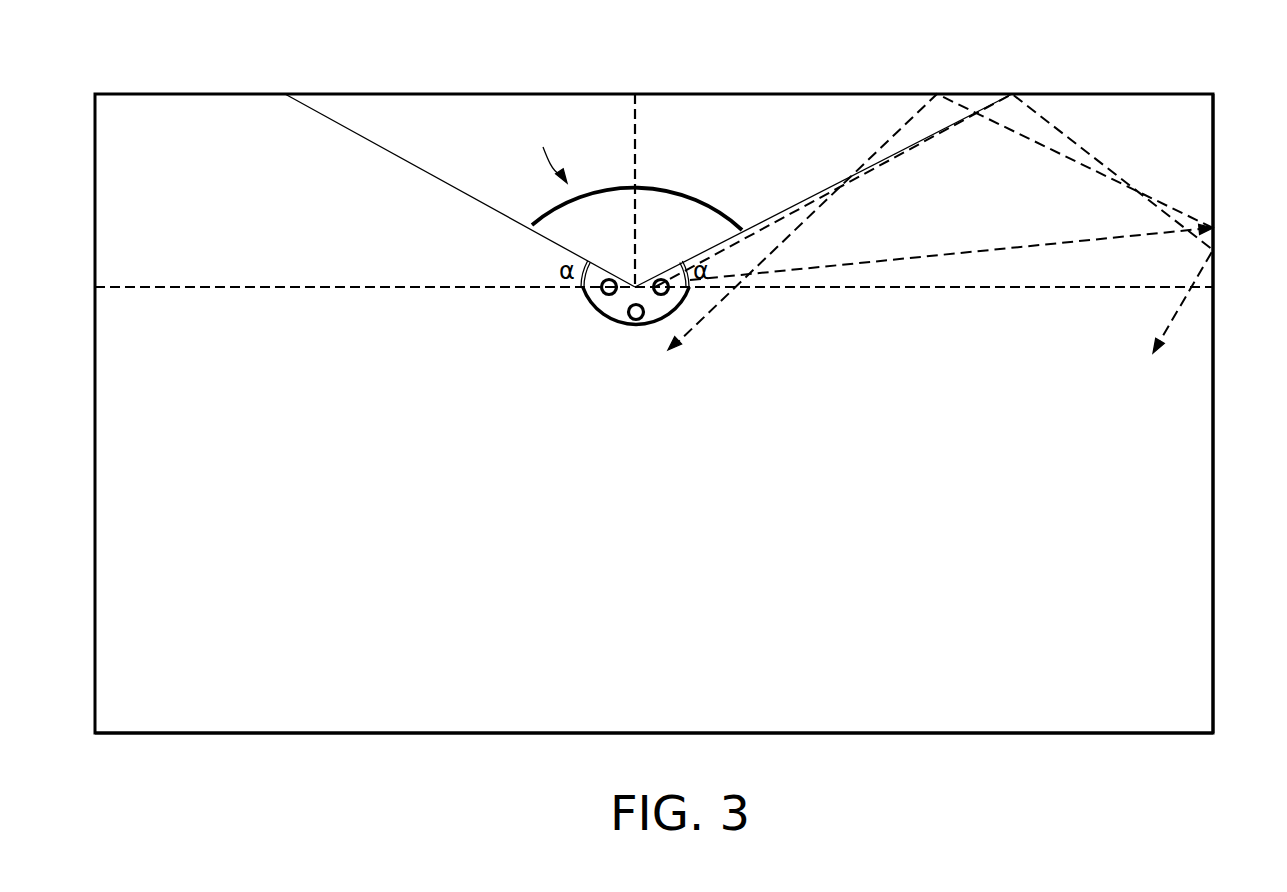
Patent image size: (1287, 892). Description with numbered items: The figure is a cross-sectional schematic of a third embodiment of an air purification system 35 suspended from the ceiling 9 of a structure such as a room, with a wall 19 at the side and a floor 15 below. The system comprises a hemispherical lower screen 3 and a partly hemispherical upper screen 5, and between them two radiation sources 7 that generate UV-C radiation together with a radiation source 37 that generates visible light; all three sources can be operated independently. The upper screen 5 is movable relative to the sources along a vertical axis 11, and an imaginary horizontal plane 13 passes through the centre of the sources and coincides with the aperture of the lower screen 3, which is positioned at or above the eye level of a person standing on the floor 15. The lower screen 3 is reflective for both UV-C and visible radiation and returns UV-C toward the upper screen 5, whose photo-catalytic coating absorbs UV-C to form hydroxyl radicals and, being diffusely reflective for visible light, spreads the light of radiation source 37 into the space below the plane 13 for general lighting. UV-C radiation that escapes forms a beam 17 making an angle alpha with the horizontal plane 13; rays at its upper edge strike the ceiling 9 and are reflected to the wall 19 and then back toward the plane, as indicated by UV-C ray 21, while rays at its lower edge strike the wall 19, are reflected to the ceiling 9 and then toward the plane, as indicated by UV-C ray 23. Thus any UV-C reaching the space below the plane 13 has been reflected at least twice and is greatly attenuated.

The lower screen 3 is at (603, 326).
The upper screen 5 is at (692, 196).
The radiation source 7 is at (611, 277).
The ceiling 9 is at (1150, 93).
The vertical axis 11 is at (637, 113).
The imaginary horizontal plane 13 is at (342, 288).
The floor 15 is at (338, 734).
The beam 17 is at (362, 152).
The wall 19 is at (1214, 150).
The UV-C ray 21 is at (1083, 147).
The UV-C ray 23 is at (970, 252).
The air purification system 35 is at (545, 150).
The radiation source 37 is at (637, 323).